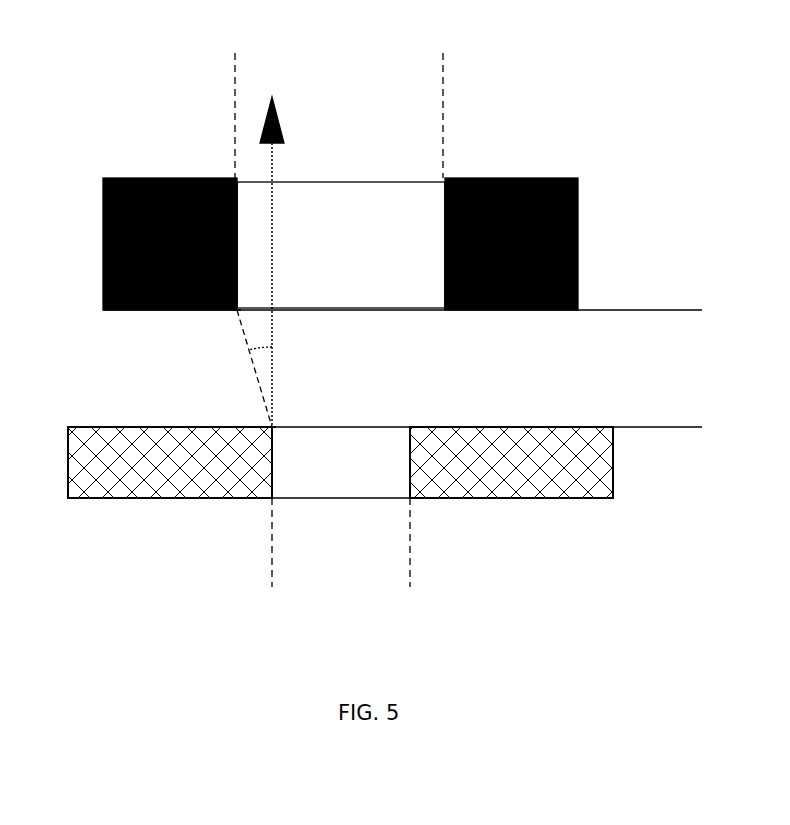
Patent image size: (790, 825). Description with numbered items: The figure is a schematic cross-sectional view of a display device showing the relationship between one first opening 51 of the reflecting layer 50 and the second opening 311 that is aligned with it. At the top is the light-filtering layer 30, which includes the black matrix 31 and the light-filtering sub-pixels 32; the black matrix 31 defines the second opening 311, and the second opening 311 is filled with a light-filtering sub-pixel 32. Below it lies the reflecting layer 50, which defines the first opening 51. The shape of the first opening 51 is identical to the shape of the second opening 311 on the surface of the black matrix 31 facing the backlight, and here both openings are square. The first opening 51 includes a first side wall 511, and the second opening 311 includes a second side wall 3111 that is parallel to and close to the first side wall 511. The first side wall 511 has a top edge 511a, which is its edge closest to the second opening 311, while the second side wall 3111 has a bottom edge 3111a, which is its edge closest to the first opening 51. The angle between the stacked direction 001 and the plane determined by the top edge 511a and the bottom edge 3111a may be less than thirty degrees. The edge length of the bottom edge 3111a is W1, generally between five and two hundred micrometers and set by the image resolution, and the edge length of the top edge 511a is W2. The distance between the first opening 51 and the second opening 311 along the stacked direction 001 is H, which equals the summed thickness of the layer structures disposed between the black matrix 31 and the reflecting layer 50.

The stacked direction 001 is at (265, 160).
The light-filtering layer 30 is at (567, 82).
The black matrix 31 is at (508, 180).
The light-filtering sub-pixel 32 is at (380, 197).
The second opening 311 is at (443, 53).
The second side wall 3111 is at (238, 202).
The bottom edge 3111a is at (240, 307).
The reflecting layer 50 is at (543, 457).
The first opening 51 is at (410, 588).
The first side wall 511 is at (273, 475).
The top edge 511a is at (275, 428).
The edge length of the bottom edge W1 is at (444, 233).
The edge length of the top edge W2 is at (410, 450).
The distance between the first opening and the second opening H is at (667, 310).